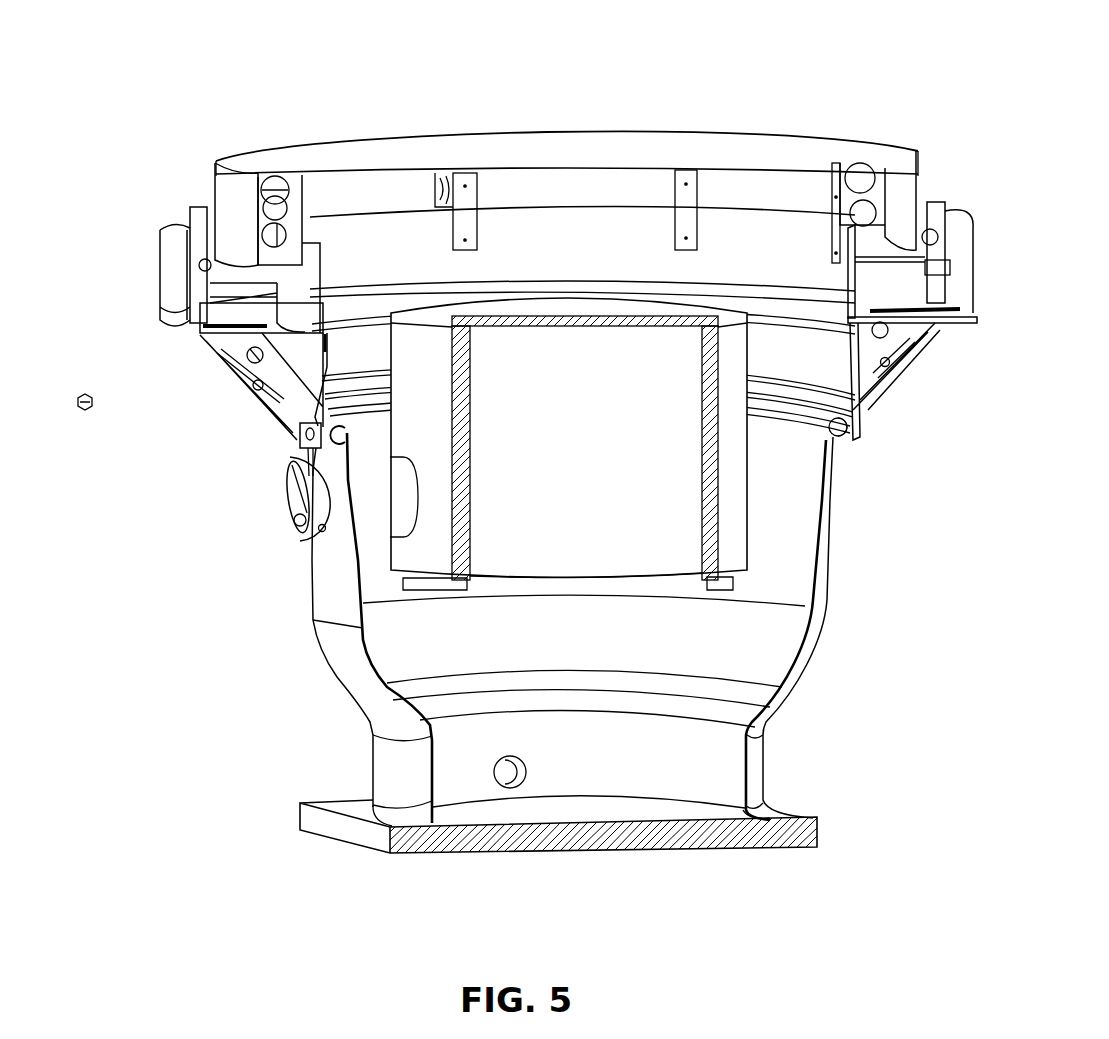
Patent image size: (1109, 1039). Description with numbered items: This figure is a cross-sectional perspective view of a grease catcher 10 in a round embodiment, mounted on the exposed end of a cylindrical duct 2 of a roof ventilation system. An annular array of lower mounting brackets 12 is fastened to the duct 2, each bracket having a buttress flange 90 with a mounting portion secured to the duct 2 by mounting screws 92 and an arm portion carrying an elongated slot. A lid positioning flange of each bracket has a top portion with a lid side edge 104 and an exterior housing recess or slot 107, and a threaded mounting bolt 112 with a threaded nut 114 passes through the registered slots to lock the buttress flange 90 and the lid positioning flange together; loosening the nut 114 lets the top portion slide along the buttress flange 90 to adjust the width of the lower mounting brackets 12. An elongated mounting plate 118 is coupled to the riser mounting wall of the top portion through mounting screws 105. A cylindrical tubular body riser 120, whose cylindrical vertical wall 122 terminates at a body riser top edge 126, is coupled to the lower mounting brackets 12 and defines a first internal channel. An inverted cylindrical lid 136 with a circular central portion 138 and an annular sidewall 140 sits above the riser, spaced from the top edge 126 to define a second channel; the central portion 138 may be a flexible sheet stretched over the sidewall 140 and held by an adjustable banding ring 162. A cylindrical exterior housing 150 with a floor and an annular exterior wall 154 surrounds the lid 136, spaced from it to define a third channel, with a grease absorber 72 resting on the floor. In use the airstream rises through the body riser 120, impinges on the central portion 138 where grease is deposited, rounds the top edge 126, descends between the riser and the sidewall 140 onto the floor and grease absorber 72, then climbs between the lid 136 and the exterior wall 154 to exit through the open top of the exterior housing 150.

The duct 2 is at (822, 600).
The grease catcher 10 is at (528, 483).
The lower mounting bracket 12 is at (900, 327).
The grease absorber 72 is at (217, 323).
The buttress flange 90 is at (300, 447).
The mounting screw 92 is at (291, 458).
The lid side edge 104 is at (855, 183).
The mounting screw 105 is at (683, 240).
The exterior housing recess or slot 107 is at (937, 224).
The threaded mounting bolt 112 is at (258, 387).
The threaded nut 114 is at (890, 367).
The elongated mounting plate 118 is at (697, 223).
The body riser 120 is at (600, 268).
The cylindrical vertical wall 122 is at (401, 264).
The body riser top edge 126 is at (573, 206).
The lid 136 is at (457, 142).
The lid central portion 138 is at (547, 143).
The lid annular sidewall 140 is at (215, 190).
The exterior housing 150 is at (168, 228).
The exterior wall 154 is at (170, 277).
The banding ring 162 is at (233, 192).